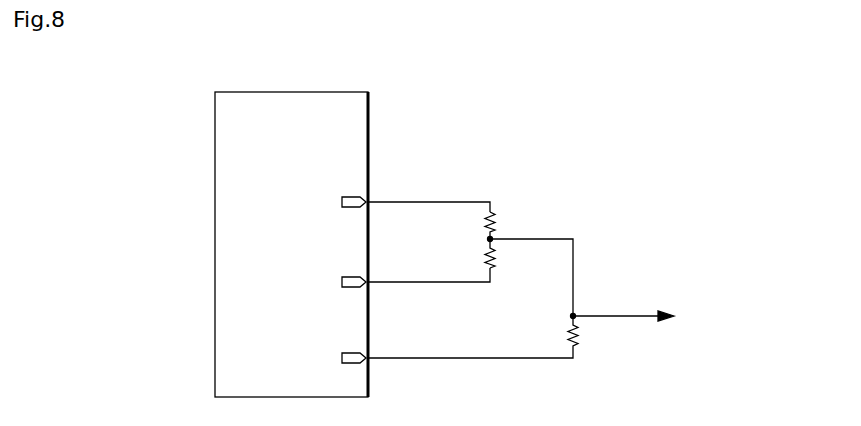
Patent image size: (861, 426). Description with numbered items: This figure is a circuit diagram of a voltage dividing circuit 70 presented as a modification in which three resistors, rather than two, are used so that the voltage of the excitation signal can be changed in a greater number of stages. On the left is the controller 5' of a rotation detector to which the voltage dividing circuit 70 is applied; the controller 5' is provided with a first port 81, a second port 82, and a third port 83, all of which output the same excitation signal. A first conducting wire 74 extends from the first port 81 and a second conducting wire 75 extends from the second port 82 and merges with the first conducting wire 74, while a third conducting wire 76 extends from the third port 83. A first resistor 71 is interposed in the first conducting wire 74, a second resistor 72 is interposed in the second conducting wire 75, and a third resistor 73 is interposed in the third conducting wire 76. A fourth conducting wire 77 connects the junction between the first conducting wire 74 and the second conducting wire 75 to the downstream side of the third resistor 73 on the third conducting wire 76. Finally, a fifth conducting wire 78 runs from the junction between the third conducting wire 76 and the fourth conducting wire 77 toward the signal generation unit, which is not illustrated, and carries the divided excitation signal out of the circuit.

The controller 5' is at (317, 244).
The voltage dividing circuit 70 is at (626, 152).
The first resistor 71 is at (478, 222).
The second resistor 72 is at (478, 259).
The third resistor 73 is at (560, 329).
The first conducting wire 74 is at (399, 200).
The second conducting wire 75 is at (400, 280).
The third conducting wire 76 is at (399, 356).
The fourth conducting wire 77 is at (553, 237).
The fifth conducting wire 78 is at (622, 314).
The first port 81 is at (346, 195).
The second port 82 is at (346, 275).
The third port 83 is at (346, 351).